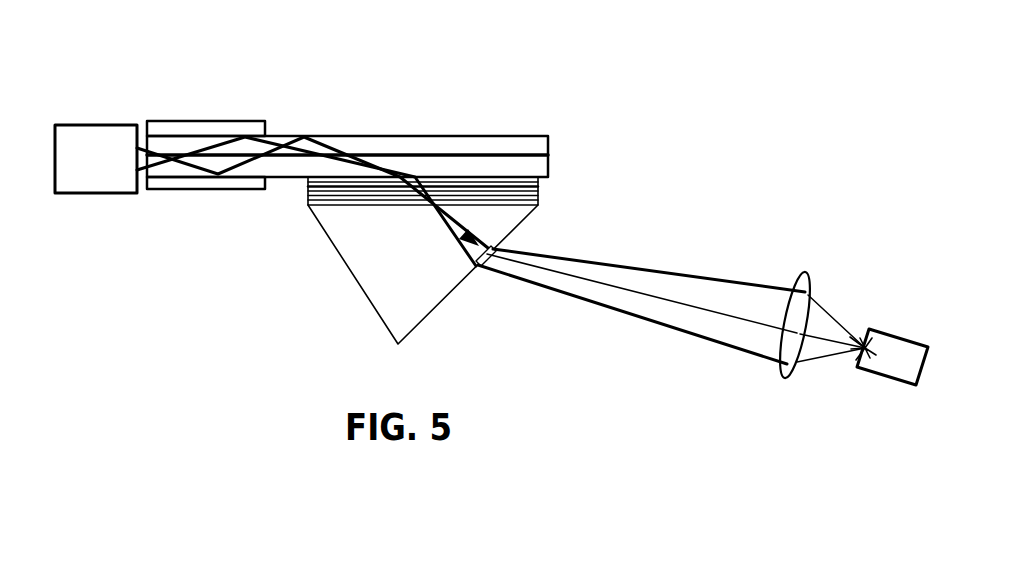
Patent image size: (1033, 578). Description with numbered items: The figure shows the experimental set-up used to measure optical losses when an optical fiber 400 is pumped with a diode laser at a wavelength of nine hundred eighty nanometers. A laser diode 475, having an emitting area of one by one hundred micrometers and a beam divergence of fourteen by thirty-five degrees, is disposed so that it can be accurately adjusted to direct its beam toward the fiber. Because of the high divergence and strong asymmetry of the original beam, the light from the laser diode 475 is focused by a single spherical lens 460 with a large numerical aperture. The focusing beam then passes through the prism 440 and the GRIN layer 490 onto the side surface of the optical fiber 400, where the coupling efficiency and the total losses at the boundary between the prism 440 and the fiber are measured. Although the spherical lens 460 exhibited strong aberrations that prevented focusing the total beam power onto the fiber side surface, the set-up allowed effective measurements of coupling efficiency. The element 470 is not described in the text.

The optical fiber 400 is at (394, 122).
The prism 440 is at (371, 272).
The spherical lens 460 is at (803, 285).
The light source 470 is at (87, 141).
The laser diode 475 is at (904, 369).
The GRIN layer 490 is at (290, 197).